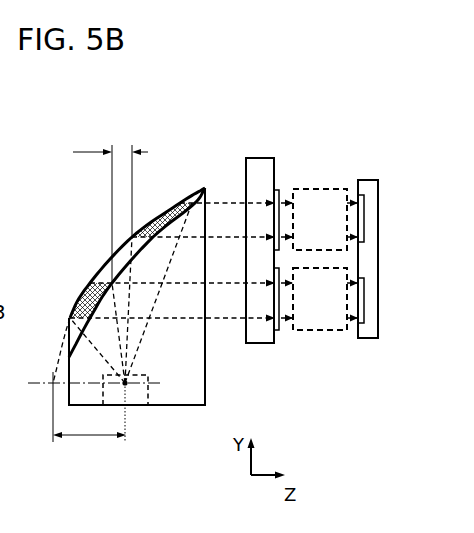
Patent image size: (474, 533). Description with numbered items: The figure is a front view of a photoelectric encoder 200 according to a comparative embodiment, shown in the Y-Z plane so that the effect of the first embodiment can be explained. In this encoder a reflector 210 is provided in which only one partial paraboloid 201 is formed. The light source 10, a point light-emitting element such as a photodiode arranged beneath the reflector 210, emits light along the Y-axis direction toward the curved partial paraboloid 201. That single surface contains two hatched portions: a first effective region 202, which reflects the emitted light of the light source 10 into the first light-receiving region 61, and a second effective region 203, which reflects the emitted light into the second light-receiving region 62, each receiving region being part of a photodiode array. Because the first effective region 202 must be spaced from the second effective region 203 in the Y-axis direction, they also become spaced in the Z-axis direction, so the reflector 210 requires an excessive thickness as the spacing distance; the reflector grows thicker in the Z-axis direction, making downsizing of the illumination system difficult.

The photoelectric encoder 200 is at (330, 194).
The reflector 210 is at (63, 211).
The partial paraboloid 201 is at (194, 193).
The first effective region 202 is at (162, 216).
The second effective region 203 is at (87, 287).
The light source 10 is at (135, 400).
The first light-receiving region 61 is at (363, 209).
The second light-receiving region 62 is at (363, 292).